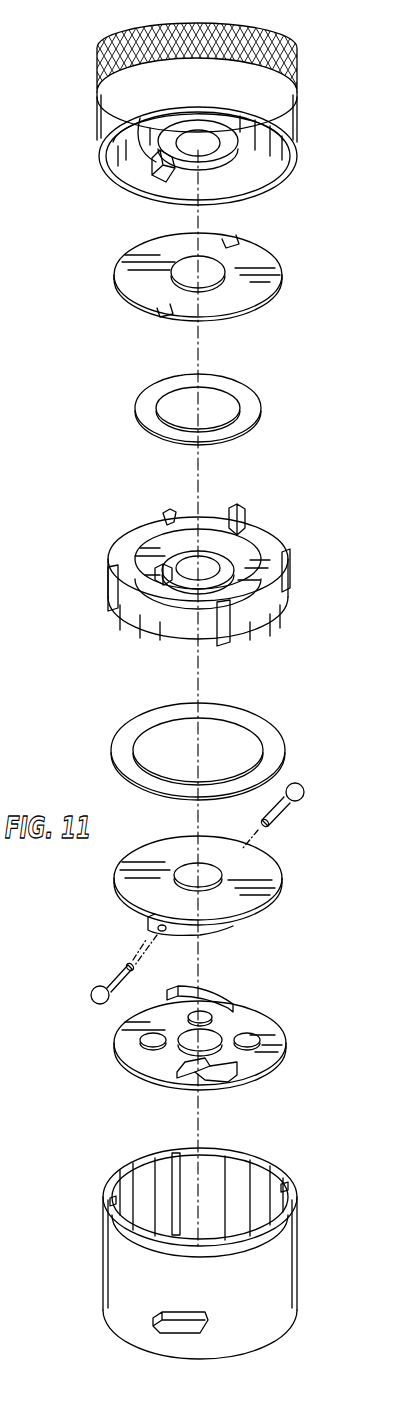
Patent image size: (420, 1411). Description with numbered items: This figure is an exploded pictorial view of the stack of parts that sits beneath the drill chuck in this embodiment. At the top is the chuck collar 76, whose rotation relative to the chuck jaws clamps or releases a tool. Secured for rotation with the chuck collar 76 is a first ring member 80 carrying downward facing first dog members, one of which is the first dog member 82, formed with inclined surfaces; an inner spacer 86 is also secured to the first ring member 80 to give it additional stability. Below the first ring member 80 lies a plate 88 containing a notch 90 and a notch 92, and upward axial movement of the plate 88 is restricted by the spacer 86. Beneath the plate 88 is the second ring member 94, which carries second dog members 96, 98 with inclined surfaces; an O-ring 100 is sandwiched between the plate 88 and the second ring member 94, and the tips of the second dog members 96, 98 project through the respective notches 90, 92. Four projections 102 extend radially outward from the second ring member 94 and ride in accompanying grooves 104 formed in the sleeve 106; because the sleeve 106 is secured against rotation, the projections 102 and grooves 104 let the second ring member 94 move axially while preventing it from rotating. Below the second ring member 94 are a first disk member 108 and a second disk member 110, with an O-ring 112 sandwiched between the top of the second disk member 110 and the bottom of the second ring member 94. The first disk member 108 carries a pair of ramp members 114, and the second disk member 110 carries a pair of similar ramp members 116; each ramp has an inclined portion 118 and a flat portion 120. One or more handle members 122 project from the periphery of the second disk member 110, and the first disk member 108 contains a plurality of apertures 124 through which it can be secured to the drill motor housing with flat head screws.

The chuck collar 76 is at (297, 72).
The first ring member 80 is at (297, 123).
The first dog member 82 is at (160, 168).
The inner spacer 86 is at (227, 150).
The plate 88 is at (222, 275).
The notch 90 is at (233, 238).
The notch 92 is at (157, 313).
The second ring member 94 is at (213, 565).
The second dog member 96 is at (245, 518).
The second dog member 98 is at (162, 588).
The O-ring 100 is at (255, 407).
The projection 102 is at (290, 574).
The groove 104 is at (178, 1180).
The sleeve 106 is at (232, 1237).
The first disk member 108 is at (225, 1043).
The second disk member 110 is at (235, 900).
The O-ring 112 is at (270, 735).
The ramp member 114 is at (188, 1002).
The ramp member 116 is at (180, 935).
The inclined portion 118 is at (197, 1073).
The flat portion 120 is at (228, 1070).
The handle member 122 is at (300, 804).
The aperture 124 is at (122, 1035).